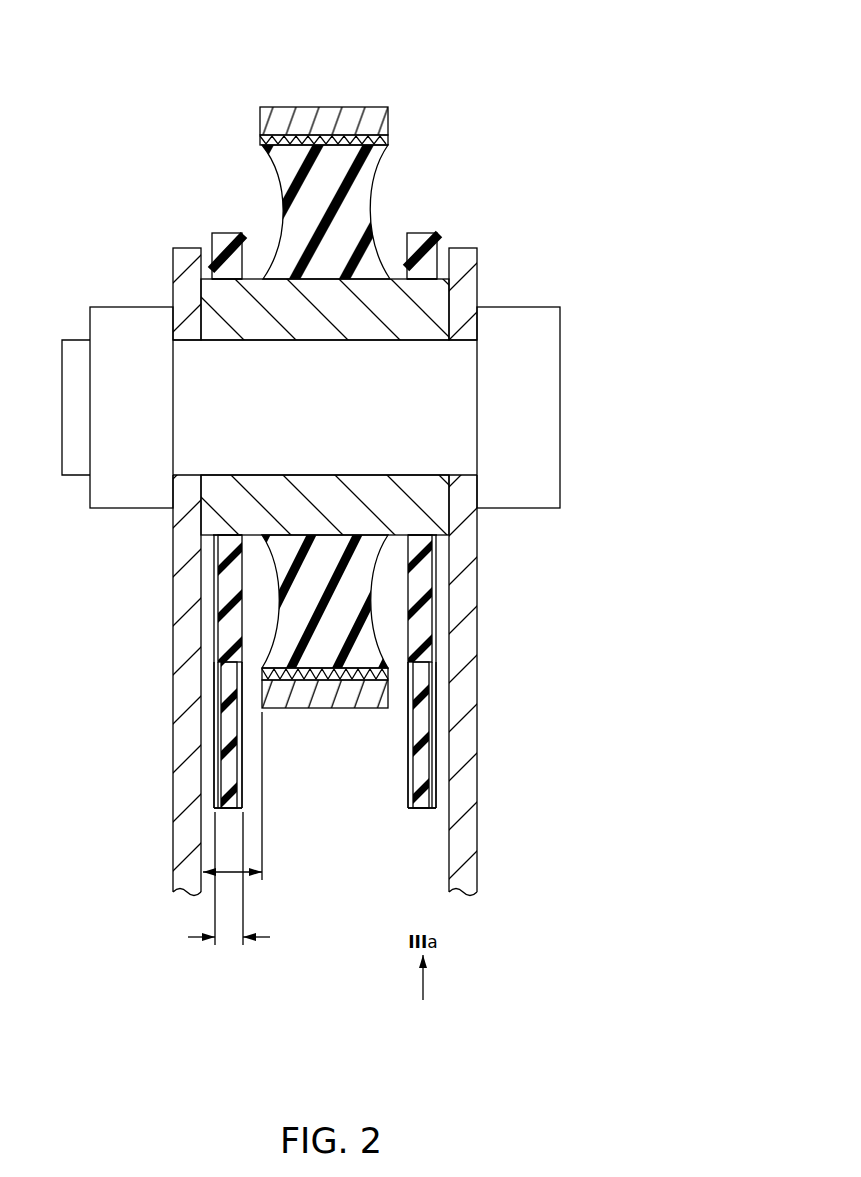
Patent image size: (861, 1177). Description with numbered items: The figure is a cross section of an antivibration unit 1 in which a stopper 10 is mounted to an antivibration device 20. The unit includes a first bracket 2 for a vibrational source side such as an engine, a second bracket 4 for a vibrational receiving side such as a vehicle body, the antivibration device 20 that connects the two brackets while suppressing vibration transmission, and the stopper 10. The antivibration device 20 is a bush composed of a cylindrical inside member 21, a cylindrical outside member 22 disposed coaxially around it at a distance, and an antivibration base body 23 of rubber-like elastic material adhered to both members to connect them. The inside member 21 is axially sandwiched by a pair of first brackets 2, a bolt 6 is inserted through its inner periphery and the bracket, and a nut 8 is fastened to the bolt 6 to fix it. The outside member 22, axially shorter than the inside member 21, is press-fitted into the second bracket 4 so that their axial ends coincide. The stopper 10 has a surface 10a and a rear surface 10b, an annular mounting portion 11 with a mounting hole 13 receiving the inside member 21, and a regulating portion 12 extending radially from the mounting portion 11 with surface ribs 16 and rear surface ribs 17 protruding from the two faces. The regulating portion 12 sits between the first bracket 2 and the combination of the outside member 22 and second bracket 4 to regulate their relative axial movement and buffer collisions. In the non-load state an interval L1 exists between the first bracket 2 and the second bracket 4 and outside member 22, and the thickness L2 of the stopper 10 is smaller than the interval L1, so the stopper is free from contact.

The antivibration unit 1 is at (88, 75).
The first bracket 2 is at (187, 597).
The second bracket 4 is at (321, 697).
The bolt 6 is at (540, 390).
The nut 8 is at (128, 327).
The stopper 10 is at (334, 510).
The surface 10a is at (245, 597).
The rear surface 10b is at (218, 640).
The mounting portion 11 is at (232, 263).
The regulating portion 12 is at (232, 810).
The mounting hole 13 is at (423, 290).
The surface rib 16 is at (247, 777).
The rear surface rib 17 is at (214, 782).
The antivibration device 20 is at (451, 166).
The inside member 21 is at (406, 331).
The outside member 22 is at (300, 143).
The antivibration base body 23 is at (367, 180).
The interval L1 is at (227, 873).
The thickness L2 is at (230, 940).